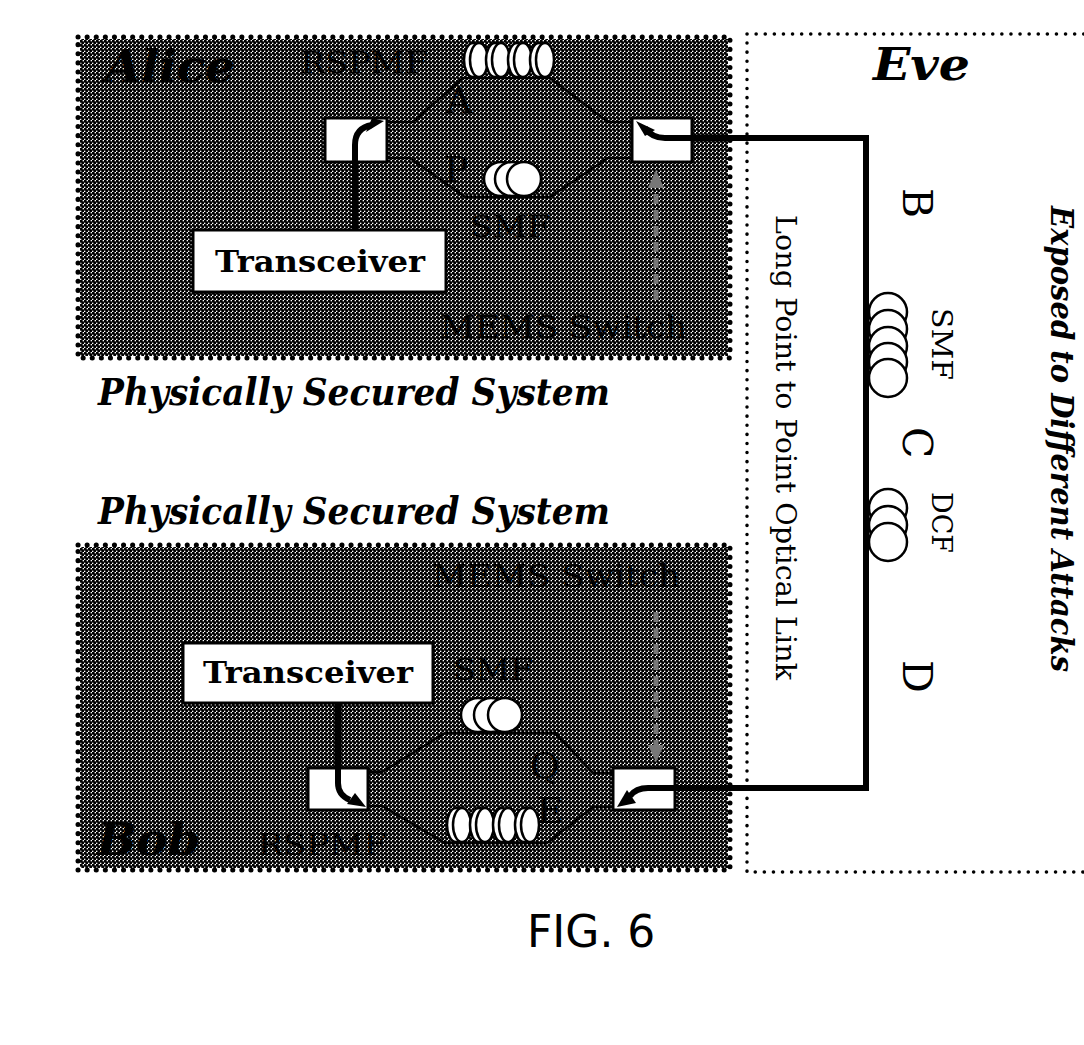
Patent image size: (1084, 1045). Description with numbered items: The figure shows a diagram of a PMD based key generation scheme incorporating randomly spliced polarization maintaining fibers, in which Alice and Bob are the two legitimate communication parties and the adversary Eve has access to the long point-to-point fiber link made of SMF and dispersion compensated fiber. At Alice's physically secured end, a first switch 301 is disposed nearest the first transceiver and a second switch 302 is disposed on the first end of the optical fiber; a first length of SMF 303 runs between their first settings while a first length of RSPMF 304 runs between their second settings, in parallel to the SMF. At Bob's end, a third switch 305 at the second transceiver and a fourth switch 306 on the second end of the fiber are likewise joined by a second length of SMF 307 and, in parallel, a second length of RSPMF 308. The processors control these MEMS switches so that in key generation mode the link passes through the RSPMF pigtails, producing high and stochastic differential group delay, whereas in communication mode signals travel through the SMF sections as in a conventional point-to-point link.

The first switch 301 is at (332, 138).
The second switch 302 is at (667, 120).
The first length of SMF 303 is at (573, 185).
The first length of RSPMF 304 is at (548, 82).
The third switch 305 is at (317, 795).
The fourth switch 306 is at (678, 808).
The second length of SMF 307 is at (577, 758).
The second length of RSPMF 308 is at (413, 822).